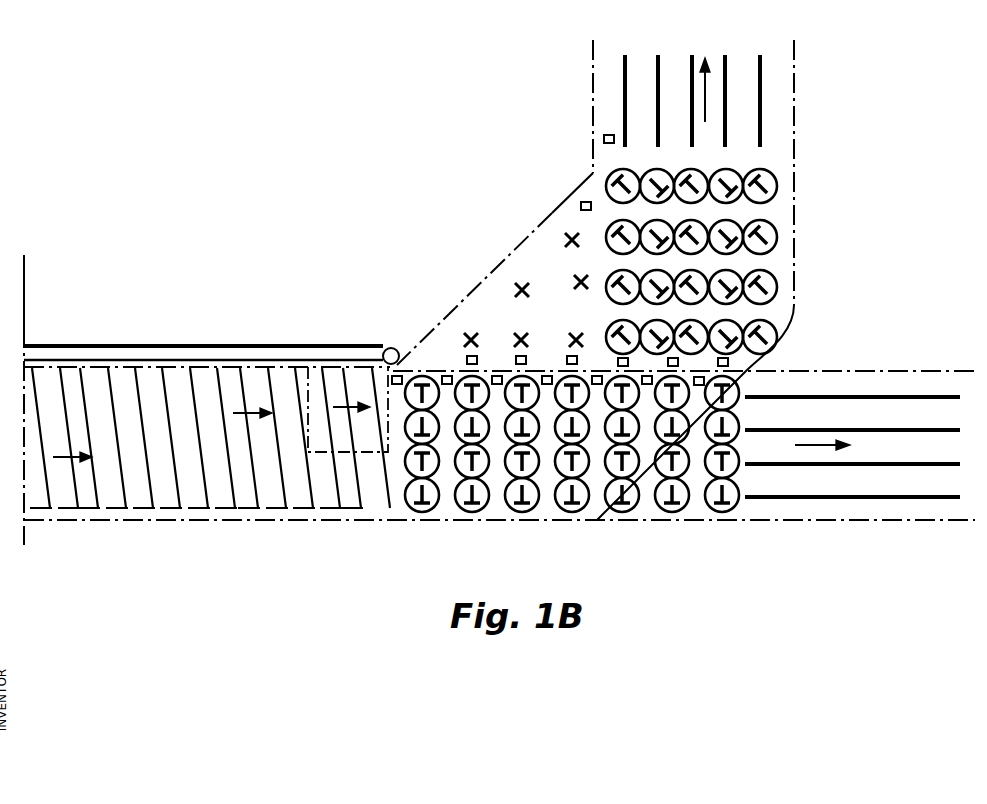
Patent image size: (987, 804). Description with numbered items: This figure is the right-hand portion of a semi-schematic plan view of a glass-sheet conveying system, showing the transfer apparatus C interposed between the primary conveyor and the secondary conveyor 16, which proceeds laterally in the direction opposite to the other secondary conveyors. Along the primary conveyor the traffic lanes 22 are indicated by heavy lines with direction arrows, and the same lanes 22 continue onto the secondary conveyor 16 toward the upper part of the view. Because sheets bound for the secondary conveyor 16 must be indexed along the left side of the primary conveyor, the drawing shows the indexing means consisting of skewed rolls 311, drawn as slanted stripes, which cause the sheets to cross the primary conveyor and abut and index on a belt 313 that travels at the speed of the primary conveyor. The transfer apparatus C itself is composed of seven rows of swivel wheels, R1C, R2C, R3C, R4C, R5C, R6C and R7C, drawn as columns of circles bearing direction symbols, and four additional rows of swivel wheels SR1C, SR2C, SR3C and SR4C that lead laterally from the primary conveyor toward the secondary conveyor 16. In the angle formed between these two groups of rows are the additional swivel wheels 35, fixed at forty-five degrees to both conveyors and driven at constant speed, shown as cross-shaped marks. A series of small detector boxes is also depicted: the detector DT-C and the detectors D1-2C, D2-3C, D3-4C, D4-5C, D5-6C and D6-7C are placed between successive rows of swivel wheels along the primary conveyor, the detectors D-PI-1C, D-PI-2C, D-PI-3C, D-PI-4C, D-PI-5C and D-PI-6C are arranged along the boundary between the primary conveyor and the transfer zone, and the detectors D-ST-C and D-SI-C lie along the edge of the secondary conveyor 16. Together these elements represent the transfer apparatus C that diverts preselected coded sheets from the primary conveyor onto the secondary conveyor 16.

The secondary conveyor 16 is at (798, 95).
The traffic lane 22 is at (657, 75).
The swivel wheels 35 is at (566, 246).
The skewed rolls 311 is at (172, 486).
The belt 313 is at (180, 345).
The transfer apparatus C is at (872, 268).
The straight-through detector D-ST-C is at (602, 139).
The side detector D-SI-C is at (580, 206).
The pedestrian detector 1 D-PI-1C is at (467, 358).
The pedestrian detector 2 D-PI-2C is at (516, 358).
The pedestrian detector 3 D-PI-3C is at (567, 360).
The pedestrian detector 4 D-PI-4C is at (618, 361).
The pedestrian detector 5 D-PI-5C is at (668, 361).
The pedestrian detector 6 D-PI-6C is at (729, 362).
The signal row 1 SR1C is at (778, 333).
The signal row 2 SR2C is at (778, 288).
The signal row 3 SR3C is at (778, 240).
The signal row 4 SR4C is at (778, 188).
The turn detector DT-C is at (397, 385).
The detector between rows 1 and 2 D1-2C is at (447, 385).
The detector between rows 2 and 3 D2-3C is at (497, 385).
The detector between rows 3 and 4 D3-4C is at (547, 385).
The detector between rows 4 and 5 D4-5C is at (597, 385).
The detector between rows 5 and 6 D5-6C is at (647, 385).
The detector between rows 6 and 7 D6-7C is at (699, 386).
The signal column 1 R1C is at (430, 512).
The signal column 2 R2C is at (480, 512).
The signal column 3 R3C is at (530, 512).
The signal column 4 R4C is at (580, 512).
The signal column 5 R5C is at (630, 512).
The signal column 6 R6C is at (680, 512).
The signal column 7 R7C is at (730, 512).